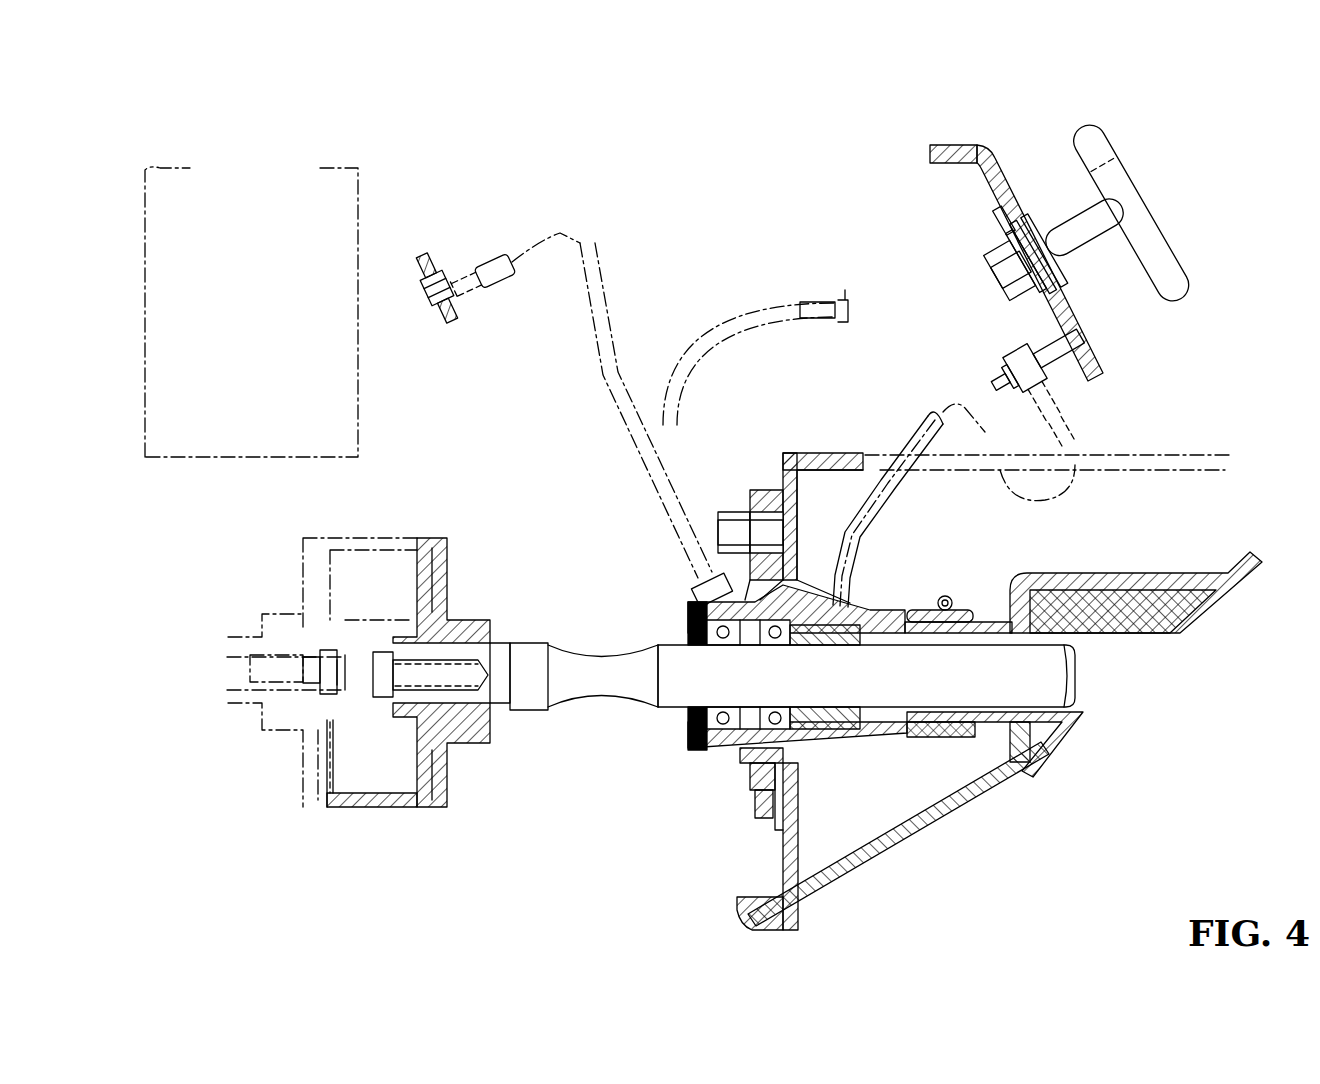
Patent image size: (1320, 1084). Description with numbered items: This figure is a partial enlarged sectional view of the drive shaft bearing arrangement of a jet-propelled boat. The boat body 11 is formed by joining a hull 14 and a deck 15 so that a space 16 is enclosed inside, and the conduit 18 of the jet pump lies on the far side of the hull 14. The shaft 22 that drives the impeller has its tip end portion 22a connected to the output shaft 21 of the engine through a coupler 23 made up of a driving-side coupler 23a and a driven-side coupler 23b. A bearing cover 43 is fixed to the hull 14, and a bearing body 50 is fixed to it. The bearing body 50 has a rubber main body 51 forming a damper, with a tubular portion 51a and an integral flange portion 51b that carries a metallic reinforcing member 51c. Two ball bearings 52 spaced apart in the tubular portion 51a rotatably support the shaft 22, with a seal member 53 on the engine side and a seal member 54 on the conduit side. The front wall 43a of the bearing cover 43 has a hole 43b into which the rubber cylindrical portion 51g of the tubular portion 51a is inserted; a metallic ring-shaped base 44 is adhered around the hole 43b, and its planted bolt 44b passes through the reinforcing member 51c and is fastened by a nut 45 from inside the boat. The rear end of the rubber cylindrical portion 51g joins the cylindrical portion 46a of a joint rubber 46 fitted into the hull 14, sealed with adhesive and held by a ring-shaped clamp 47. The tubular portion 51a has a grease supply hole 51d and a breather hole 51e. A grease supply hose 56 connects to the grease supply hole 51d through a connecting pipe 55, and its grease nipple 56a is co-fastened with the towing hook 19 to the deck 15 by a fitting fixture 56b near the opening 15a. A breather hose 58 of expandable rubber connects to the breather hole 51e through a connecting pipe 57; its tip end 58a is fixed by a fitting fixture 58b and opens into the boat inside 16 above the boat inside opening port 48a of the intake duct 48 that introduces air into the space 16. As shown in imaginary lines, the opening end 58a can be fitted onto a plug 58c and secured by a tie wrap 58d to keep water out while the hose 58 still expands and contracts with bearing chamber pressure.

The intake duct 48 is at (358, 205).
The boat inside opening port 48a is at (310, 457).
The space 16 is at (537, 442).
The conduit 18 is at (1133, 850).
The breather hose 58 is at (494, 262).
The tip end of breather hose 58a is at (432, 277).
The fitting fixture 58b is at (445, 320).
The plug 58c is at (846, 296).
The hose end 58d is at (822, 298).
The connecting pipe 57 is at (706, 575).
The deck 15 is at (1000, 172).
The opening 15a is at (920, 160).
The towing hook 19 is at (1122, 200).
The grease supply hose 56 is at (1085, 430).
The grease nipple 56a is at (1010, 362).
The fitting fixture 56b is at (1072, 375).
The bearing cover 43 is at (862, 452).
The front wall 43a is at (840, 442).
The hole 43b is at (858, 552).
The ring-shaped base 44 is at (787, 442).
The bolt 44b is at (792, 540).
The nut 45 is at (735, 512).
The main body 51 is at (690, 752).
The tubular portion 51a is at (850, 590).
The flange portion 51b is at (752, 792).
The reinforcing member 51c is at (757, 490).
The grease supply hole 51d is at (823, 647).
The breather hole 51e is at (737, 647).
The rubber cylindrical portion 51g is at (922, 740).
The bearing members 52 is at (718, 695).
The seal member 53 is at (690, 720).
The seal member 54 is at (838, 712).
The connecting pipe 55 is at (850, 612).
The bearing body 50 is at (740, 772).
The shaft 22 is at (1062, 690).
The tip end portion 22a is at (562, 712).
The coupler 23 is at (422, 815).
The driving-side coupler 23a is at (275, 735).
The driven-side coupler 23b is at (385, 808).
The output shaft 21 is at (240, 682).
The hull 14 is at (1140, 548).
The boat body 11 is at (1110, 572).
The joint rubber 46 is at (1072, 730).
The cylindrical portion 46a is at (1032, 765).
The ring-shaped clamp 47 is at (995, 765).